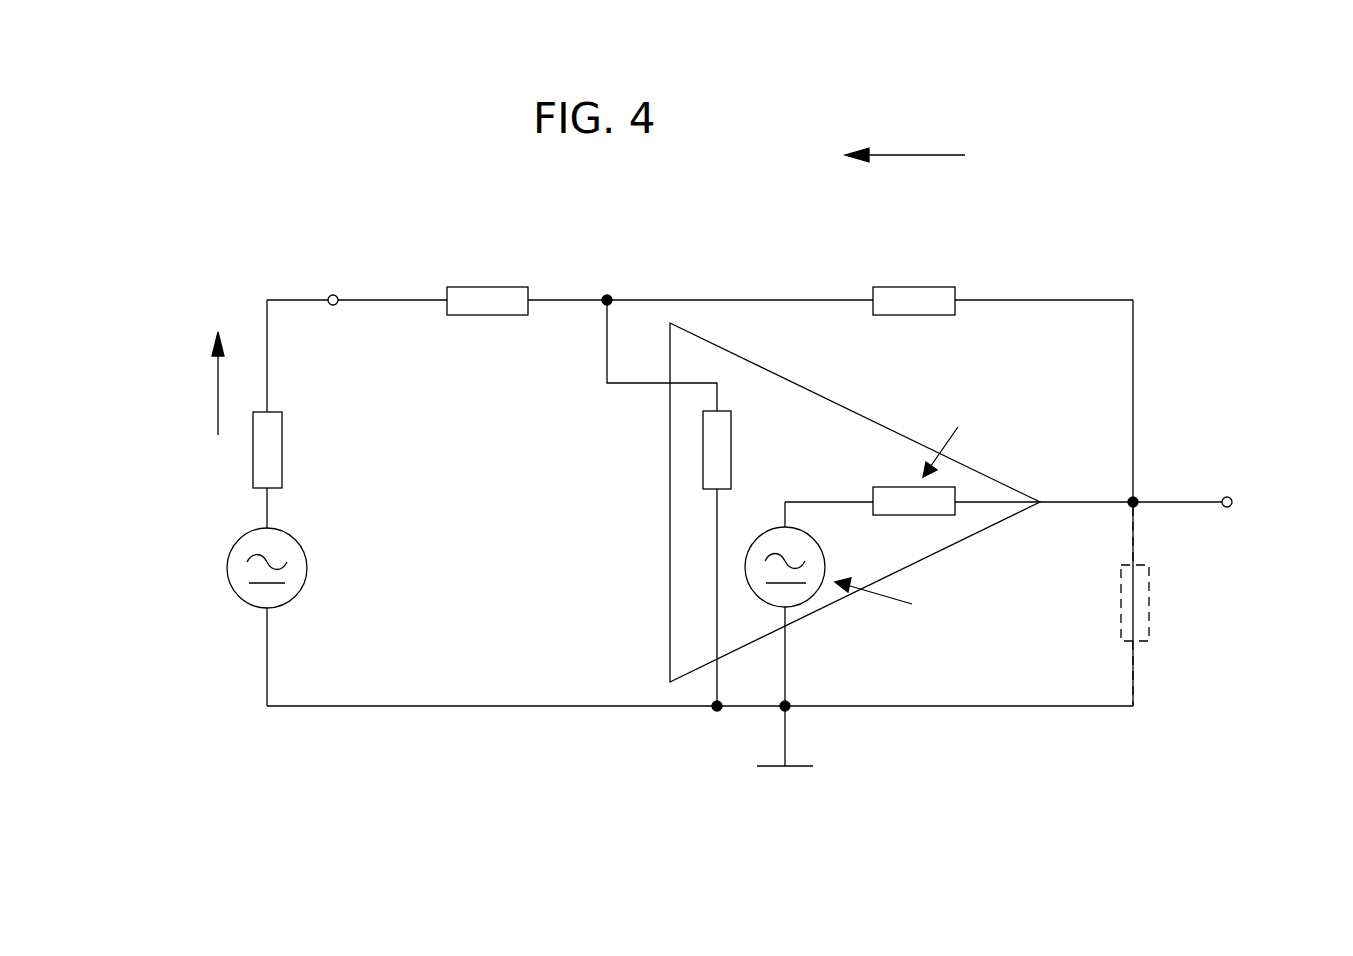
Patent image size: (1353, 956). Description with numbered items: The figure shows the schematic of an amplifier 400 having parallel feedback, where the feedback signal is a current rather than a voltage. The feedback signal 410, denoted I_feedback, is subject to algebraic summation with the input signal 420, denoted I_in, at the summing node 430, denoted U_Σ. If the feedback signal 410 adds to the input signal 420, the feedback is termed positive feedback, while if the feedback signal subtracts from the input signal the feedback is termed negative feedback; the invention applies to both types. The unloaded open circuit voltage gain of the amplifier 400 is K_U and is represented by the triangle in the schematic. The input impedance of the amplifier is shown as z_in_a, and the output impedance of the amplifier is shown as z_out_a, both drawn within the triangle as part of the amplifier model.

The amplifier 400 is at (407, 120).
The feedback signal 410 is at (950, 82).
The input signal 420 is at (213, 410).
The summing point 430 is at (582, 300).